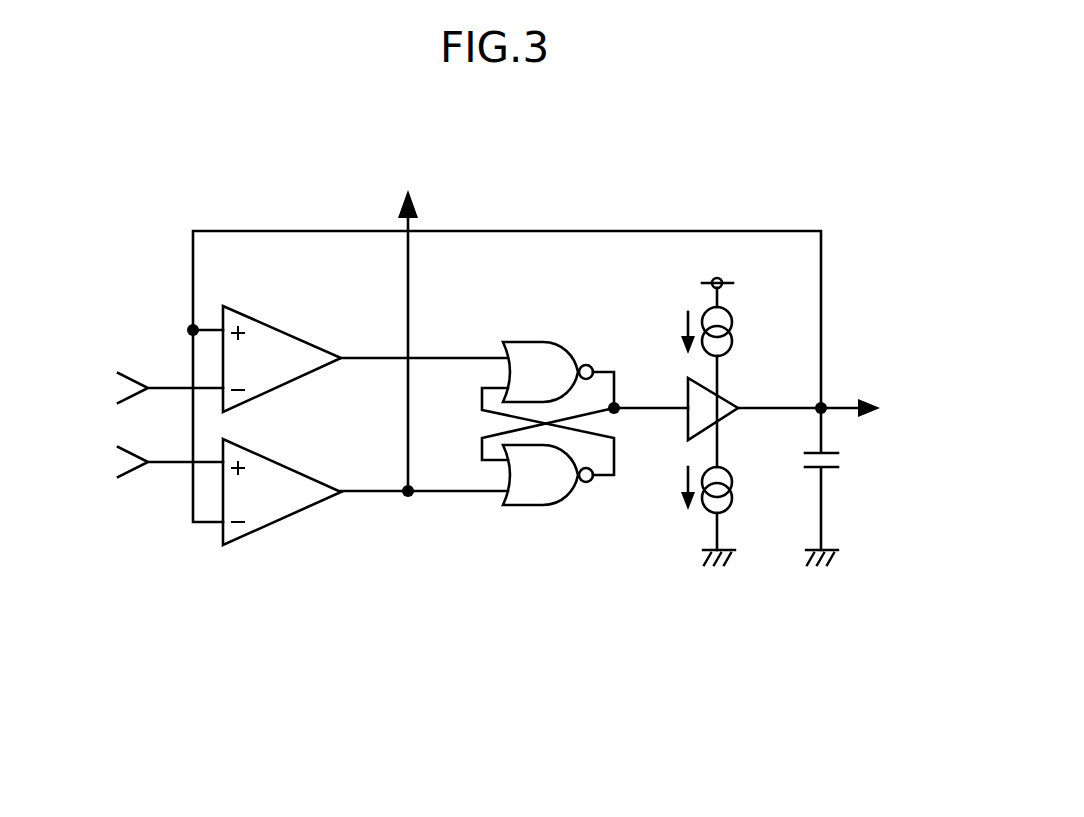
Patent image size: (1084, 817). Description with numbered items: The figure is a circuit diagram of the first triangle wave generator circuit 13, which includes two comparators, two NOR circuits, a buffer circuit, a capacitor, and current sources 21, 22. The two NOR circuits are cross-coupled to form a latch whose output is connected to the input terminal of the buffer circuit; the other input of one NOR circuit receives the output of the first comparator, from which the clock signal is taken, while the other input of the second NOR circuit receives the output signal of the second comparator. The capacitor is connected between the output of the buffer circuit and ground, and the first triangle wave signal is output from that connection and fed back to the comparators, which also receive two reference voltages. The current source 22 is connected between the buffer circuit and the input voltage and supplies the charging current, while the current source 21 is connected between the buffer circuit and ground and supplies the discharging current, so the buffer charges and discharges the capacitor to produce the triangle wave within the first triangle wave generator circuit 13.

The first triangle wave generator circuit 13 is at (612, 171).
The current source 21 is at (735, 503).
The current source 22 is at (732, 318).